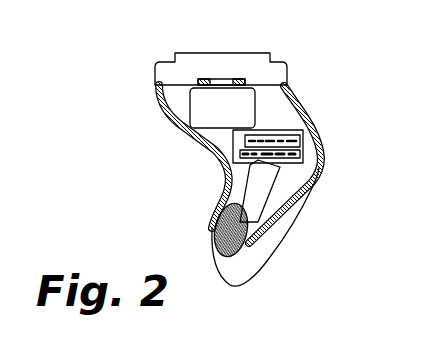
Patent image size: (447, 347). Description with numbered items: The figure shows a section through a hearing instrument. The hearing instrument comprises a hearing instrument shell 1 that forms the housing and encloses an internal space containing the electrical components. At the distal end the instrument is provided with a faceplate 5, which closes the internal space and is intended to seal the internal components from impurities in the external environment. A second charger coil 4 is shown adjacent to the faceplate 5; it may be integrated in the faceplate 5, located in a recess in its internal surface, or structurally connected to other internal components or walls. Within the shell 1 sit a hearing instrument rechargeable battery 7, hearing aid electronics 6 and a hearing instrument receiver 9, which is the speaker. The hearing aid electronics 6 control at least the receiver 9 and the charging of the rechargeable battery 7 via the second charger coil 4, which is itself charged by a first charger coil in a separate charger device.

The hearing instrument shell 1 is at (322, 148).
The second charger coil 4 is at (233, 80).
The faceplate 5 is at (160, 72).
The hearing aid electronics 6 is at (273, 128).
The hearing instrument rechargeable battery 7 is at (197, 118).
The hearing instrument receiver 9 is at (266, 198).